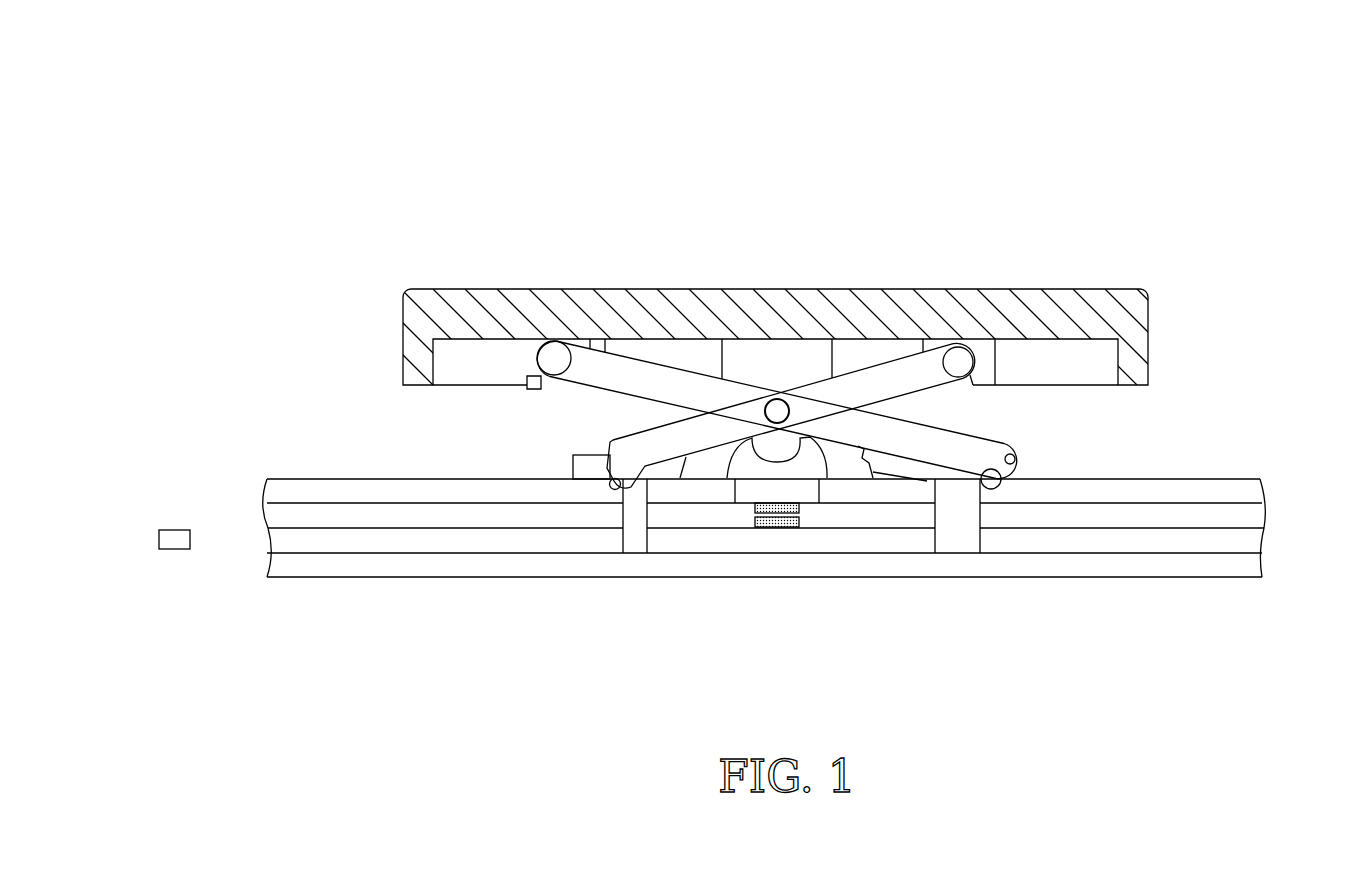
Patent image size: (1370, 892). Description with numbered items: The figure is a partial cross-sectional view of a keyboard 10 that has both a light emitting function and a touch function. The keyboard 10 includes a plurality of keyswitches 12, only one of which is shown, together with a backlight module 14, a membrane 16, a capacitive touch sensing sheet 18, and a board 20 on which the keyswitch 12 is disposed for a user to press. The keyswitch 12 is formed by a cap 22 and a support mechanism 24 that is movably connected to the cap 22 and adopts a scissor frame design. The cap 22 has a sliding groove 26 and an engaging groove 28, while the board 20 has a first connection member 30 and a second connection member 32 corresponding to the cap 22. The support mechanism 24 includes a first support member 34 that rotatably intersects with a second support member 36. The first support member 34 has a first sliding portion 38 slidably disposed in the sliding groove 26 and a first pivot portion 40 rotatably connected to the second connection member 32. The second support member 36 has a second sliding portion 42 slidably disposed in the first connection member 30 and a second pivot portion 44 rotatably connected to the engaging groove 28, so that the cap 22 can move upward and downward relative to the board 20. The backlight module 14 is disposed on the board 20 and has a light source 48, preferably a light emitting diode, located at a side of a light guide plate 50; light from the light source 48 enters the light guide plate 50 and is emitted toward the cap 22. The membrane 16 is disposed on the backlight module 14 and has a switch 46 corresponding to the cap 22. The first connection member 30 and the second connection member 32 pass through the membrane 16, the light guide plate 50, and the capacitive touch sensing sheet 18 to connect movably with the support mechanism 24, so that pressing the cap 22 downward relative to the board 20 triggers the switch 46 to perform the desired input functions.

The keyboard 10 is at (1263, 144).
The keyswitch 12 is at (769, 273).
The backlight module 14 is at (245, 472).
The membrane 16 is at (1247, 515).
The capacitive touch sensing sheet 18 is at (1250, 488).
The board 20 is at (1250, 570).
The cap 22 is at (921, 292).
The support mechanism 24 is at (672, 188).
The sliding groove 26 is at (538, 384).
The engaging groove 28 is at (985, 363).
The first connection member 30 is at (600, 466).
The second connection member 32 is at (1016, 461).
The first support member 34 is at (661, 370).
The second support member 36 is at (874, 370).
The first sliding portion 38 is at (554, 342).
The first pivot portion 40 is at (985, 458).
The second sliding portion 42 is at (628, 460).
The second pivot portion 44 is at (963, 355).
The switch 46 is at (770, 528).
The light source 48 is at (172, 530).
The light guide plate 50 is at (280, 538).